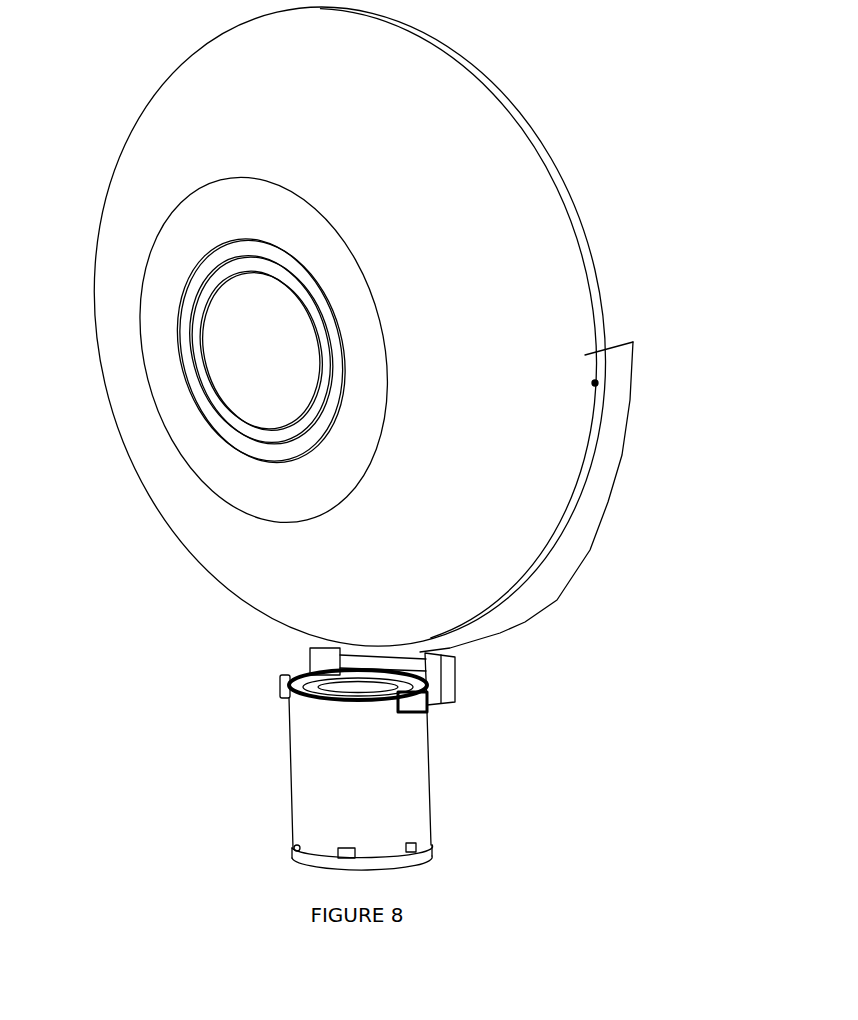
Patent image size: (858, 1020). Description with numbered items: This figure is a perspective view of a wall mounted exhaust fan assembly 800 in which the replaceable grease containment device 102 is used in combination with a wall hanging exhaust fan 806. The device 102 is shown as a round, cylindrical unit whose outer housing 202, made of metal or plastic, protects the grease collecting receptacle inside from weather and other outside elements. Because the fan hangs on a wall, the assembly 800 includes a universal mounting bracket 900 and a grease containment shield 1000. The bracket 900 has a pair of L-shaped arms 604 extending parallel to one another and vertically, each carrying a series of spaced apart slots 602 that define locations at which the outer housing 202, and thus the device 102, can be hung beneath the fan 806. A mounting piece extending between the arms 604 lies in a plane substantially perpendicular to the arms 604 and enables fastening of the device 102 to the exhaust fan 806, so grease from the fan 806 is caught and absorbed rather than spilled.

The wall mounted exhaust fan assembly 800 is at (721, 304).
The wall hanging exhaust fan 806 is at (605, 252).
The grease containment shield 1000 is at (635, 462).
The universal mounting bracket 900 is at (487, 677).
The slots 602 is at (284, 668).
The L-shaped arms 604 is at (464, 709).
The grease containment device 102 is at (446, 809).
The outer housing 202 is at (314, 816).